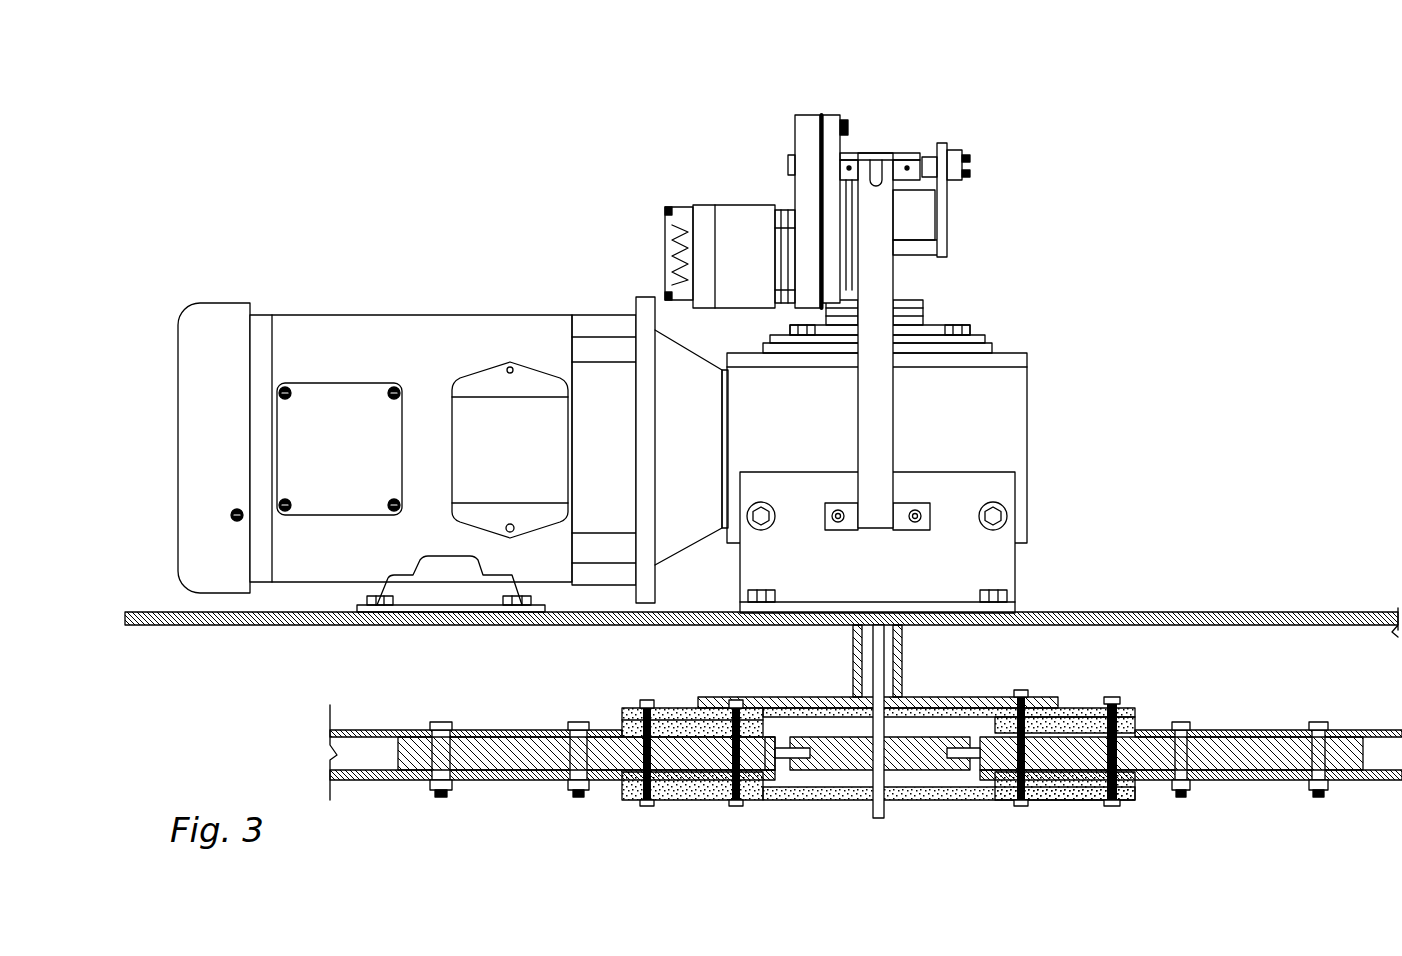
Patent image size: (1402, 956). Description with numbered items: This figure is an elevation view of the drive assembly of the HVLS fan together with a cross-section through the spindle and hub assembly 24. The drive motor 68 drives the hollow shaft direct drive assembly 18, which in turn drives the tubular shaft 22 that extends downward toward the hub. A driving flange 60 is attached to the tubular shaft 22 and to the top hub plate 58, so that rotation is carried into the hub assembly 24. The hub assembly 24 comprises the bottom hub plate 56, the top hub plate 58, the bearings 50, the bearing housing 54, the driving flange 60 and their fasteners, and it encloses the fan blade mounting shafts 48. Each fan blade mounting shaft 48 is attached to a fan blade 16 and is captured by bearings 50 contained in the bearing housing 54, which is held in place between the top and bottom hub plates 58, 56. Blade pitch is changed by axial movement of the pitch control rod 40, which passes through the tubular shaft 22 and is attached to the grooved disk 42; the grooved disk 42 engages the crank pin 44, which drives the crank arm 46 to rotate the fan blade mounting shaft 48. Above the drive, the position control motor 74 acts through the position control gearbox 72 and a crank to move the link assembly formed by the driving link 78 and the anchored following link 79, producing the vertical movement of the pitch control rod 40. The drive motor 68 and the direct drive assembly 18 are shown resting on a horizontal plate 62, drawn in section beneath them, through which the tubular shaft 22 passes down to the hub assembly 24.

The fan blades 16 is at (520, 785).
The hollow shaft direct drive assembly 18 is at (1062, 443).
The tubular shaft 22 is at (853, 648).
The hub assembly 24 is at (1125, 832).
The pitch control rod 40 is at (883, 817).
The grooved disk 42 is at (930, 765).
The crank pin 44 is at (795, 800).
The crank arm 46 is at (760, 780).
The fan blade mounting shaft 48 is at (540, 740).
The bearings 50 is at (727, 737).
The bearing housing 54 is at (1085, 718).
The bottom hub plate 56 is at (672, 800).
The top hub plate 58 is at (770, 700).
The driving flange 60 is at (958, 697).
The base plate 62 is at (1257, 617).
The drive motor 68 is at (400, 345).
The position control gearbox 72 is at (807, 140).
The position control motor 74 is at (750, 225).
The driving link 78 is at (880, 160).
The following link 79 is at (882, 268).